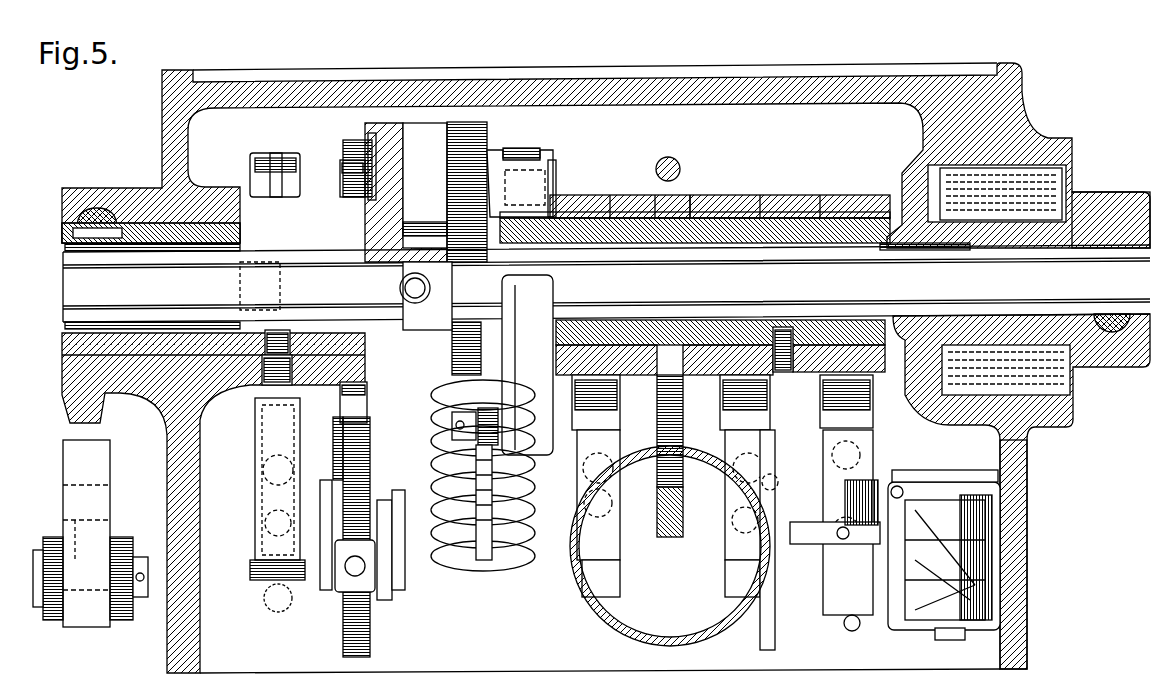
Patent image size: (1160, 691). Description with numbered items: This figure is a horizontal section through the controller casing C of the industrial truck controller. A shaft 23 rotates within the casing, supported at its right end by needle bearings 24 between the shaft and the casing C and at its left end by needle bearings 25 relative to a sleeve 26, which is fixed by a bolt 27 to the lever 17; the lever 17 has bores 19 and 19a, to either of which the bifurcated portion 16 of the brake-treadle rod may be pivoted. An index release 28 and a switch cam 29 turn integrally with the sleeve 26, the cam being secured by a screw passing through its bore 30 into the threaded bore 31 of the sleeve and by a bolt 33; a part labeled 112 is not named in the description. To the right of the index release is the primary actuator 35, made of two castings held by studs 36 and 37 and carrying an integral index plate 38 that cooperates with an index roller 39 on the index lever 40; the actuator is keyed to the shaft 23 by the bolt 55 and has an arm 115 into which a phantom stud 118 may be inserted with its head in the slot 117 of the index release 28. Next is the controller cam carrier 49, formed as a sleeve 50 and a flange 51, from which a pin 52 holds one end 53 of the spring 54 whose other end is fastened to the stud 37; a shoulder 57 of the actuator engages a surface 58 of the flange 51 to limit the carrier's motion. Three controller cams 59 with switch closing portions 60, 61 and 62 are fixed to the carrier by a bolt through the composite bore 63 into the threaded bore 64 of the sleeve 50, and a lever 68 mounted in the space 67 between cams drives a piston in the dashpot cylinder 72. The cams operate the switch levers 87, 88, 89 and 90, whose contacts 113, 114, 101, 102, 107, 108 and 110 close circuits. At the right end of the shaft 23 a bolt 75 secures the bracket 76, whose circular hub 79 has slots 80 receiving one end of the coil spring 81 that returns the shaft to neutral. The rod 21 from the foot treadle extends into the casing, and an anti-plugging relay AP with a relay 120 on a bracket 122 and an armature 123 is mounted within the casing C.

The controller casing C is at (1030, 93).
The lever 17 is at (62, 375).
The bolt 75 is at (1112, 332).
The circular hub 79 is at (1073, 420).
The slots 80 is at (978, 350).
The bracket 76 is at (1100, 192).
The coil spring 81 is at (1000, 175).
The bolt 27 is at (97, 208).
The sleeve 26 is at (62, 235).
The gear 112 is at (250, 185).
The switch cam 29 is at (268, 195).
The index release 28 is at (340, 185).
The stud 118 is at (360, 138).
The laterally extending arm 115 is at (376, 134).
The slot 117 is at (380, 165).
The primary actuator 35 is at (424, 213).
The shoulder 57 is at (500, 160).
The surface 58 is at (525, 150).
The flange 51 is at (553, 200).
The controller cam carrier 49 is at (594, 215).
The sleeve 50 is at (628, 218).
The controller cams 59 is at (608, 195).
The rod 21 is at (668, 157).
The space 67 is at (700, 190).
The shaft 23 is at (1048, 284).
The needle bearings 25 is at (90, 322).
The bolt 33 is at (240, 272).
The needle bearings 24 is at (930, 255).
The threaded bore 64 is at (735, 335).
The composite bore 63 is at (783, 330).
The bolt 55 is at (415, 300).
The end of spring 53 is at (520, 400).
The pin 52 is at (462, 412).
The spring 54 is at (470, 560).
The stud 37 is at (343, 470).
The switch lever 87 is at (246, 456).
The index plate 38 is at (338, 438).
The contact 113 is at (262, 478).
The contact 114 is at (265, 525).
The threaded bore 31 is at (250, 348).
The bore 30 is at (262, 372).
The stud 36 is at (333, 440).
The index lever 40 is at (326, 592).
The index roller 39 is at (345, 594).
The bore 19 is at (63, 492).
The bore 19a is at (72, 540).
The bifurcated portion 16 is at (125, 537).
The switch closing portion 60 is at (620, 415).
The contact 101 is at (620, 450).
The switch lever 88 is at (570, 458).
The contact 102 is at (612, 505).
The lever 68 is at (683, 445).
The switch closing portion 61 is at (720, 405).
The contact 107 is at (758, 520).
The switch closing portion 62 is at (820, 404).
The switch lever 89 is at (783, 452).
The contact 108 is at (778, 482).
The switch lever 90 is at (884, 456).
The contact 110 is at (878, 480).
The dashpot cylinder 72 is at (730, 628).
The relay 120 is at (1000, 500).
The armature 123 is at (1000, 474).
The bracket 122 is at (965, 634).
The anti-plugging relay AP is at (922, 655).